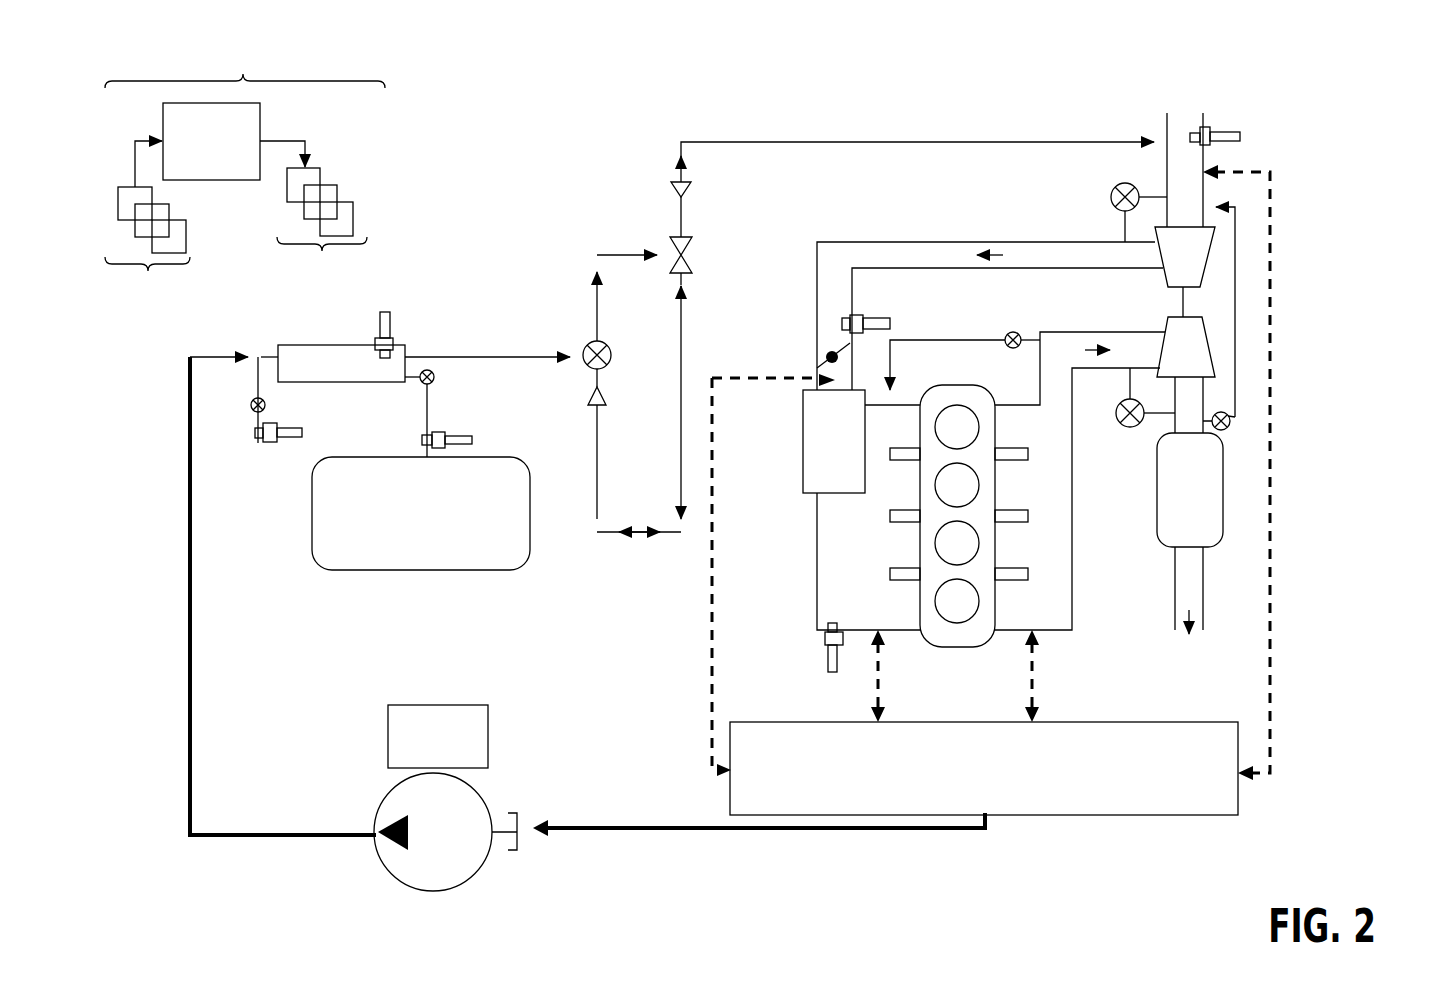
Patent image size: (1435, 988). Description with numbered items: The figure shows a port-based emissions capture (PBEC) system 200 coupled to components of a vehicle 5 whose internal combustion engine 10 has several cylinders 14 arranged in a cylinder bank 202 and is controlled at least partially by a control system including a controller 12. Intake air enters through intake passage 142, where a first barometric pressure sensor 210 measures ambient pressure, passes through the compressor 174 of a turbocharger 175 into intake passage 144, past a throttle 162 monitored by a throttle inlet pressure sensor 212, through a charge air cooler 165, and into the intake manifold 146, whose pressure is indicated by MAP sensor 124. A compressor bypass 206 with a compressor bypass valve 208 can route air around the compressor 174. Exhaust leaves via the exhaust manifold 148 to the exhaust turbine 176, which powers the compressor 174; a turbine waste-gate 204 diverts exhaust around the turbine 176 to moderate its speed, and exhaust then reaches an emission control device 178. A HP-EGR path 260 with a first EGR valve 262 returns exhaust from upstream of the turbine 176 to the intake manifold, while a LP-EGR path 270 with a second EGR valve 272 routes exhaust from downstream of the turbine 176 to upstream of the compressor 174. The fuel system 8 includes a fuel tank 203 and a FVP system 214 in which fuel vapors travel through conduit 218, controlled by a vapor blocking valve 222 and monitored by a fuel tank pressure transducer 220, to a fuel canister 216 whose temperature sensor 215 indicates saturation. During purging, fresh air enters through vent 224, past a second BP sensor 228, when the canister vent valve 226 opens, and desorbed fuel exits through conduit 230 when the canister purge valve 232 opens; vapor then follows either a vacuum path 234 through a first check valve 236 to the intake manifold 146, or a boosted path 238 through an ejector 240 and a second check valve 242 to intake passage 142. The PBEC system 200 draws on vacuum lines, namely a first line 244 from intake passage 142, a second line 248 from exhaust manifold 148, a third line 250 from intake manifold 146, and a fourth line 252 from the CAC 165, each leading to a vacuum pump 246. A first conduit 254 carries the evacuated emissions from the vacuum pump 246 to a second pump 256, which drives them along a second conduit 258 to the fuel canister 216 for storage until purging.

The vehicle 5 is at (1372, 111).
The fuel system 8 is at (508, 253).
The internal combustion engine 10 is at (1080, 642).
The controller 12 is at (245, 163).
The cylinder 14 is at (946, 439).
The MAP sensor 124 is at (828, 668).
The intake passage 142 is at (1165, 128).
The intake passage 144 is at (1013, 242).
The intake manifold 146 is at (845, 559).
The exhaust manifold 148 is at (1029, 497).
The throttle 162 is at (817, 362).
The charge air cooler 165 is at (817, 452).
The compressor 174 is at (1167, 264).
The turbocharger 175 is at (1245, 305).
The exhaust turbine 176 is at (1167, 362).
The emission control device 178 is at (1174, 507).
The PBEC system 200 is at (1015, 855).
The cylinder bank 202 is at (961, 390).
The fuel tank 203 is at (404, 527).
The turbine waste-gate 204 is at (1130, 428).
The compressor bypass 206 is at (1124, 226).
The compressor bypass valve 208 is at (1111, 196).
The first barometric pressure sensor 210 is at (1225, 133).
The throttle inlet pressure sensor 212 is at (870, 318).
The fuel vapor purge system 214 is at (271, 489).
The temperature sensor 215 is at (392, 337).
The fuel canister 216 is at (325, 375).
The conduit 218 is at (427, 406).
The fuel tank pressure transducer 220 is at (452, 433).
The vapor blocking valve 222 is at (434, 378).
The vent 224 is at (255, 372).
The canister vent valve 226 is at (252, 408).
The second barometric pressure sensor 228 is at (280, 430).
The conduit 230 is at (522, 357).
The canister purge valve 232 is at (588, 345).
The vacuum path 234 is at (611, 569).
The first check valve 236 is at (591, 406).
The boosted path 238 is at (640, 150).
The ejector 240 is at (693, 258).
The second check valve 242 is at (676, 190).
The first line 244 is at (1273, 722).
The vacuum pump 246 is at (969, 782).
The second line 248 is at (1034, 712).
The third line 250 is at (881, 710).
The fourth line 252 is at (712, 672).
The first conduit 254 is at (716, 828).
The second pump 256 is at (486, 862).
The second conduit 258 is at (190, 684).
The HP-EGR path 260 is at (936, 340).
The first EGR valve 262 is at (1018, 333).
The LP-EGR path 270 is at (1236, 395).
The second EGR valve 272 is at (1228, 431).